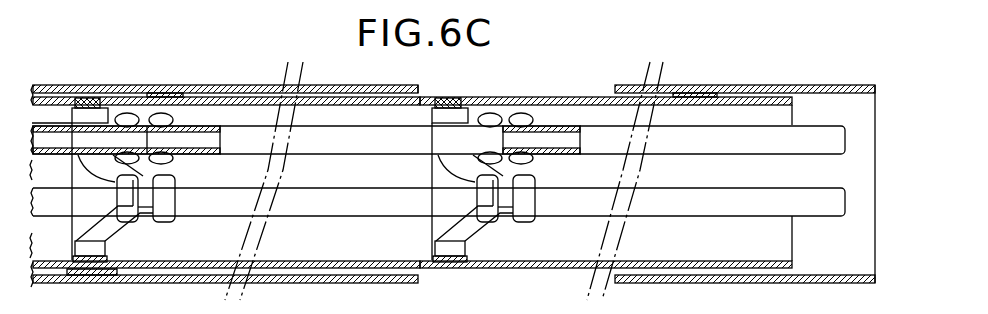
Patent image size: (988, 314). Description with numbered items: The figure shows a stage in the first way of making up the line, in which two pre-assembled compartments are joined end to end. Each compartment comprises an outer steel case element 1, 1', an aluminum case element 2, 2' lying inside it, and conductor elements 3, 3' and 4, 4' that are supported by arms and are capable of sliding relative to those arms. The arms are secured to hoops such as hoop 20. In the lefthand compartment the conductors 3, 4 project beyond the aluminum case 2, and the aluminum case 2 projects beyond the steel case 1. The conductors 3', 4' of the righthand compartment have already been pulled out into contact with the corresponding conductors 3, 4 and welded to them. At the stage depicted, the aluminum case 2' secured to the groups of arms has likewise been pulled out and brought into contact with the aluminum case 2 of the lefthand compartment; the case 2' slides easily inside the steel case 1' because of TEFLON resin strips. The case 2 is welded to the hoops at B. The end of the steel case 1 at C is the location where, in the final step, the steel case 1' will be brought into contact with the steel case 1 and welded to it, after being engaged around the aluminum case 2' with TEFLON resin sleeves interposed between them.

The steel case element 1 is at (224, 163).
The steel case element 1' is at (745, 160).
The aluminum case element 2 is at (226, 154).
The aluminum case element 2' is at (606, 153).
The conductor element 3 is at (267, 150).
The conductor element 3' is at (661, 149).
The conductor element 4 is at (235, 188).
The conductor element 4' is at (642, 187).
The hoop 20 is at (480, 98).
The weld location B is at (441, 98).
The weld location C is at (418, 92).